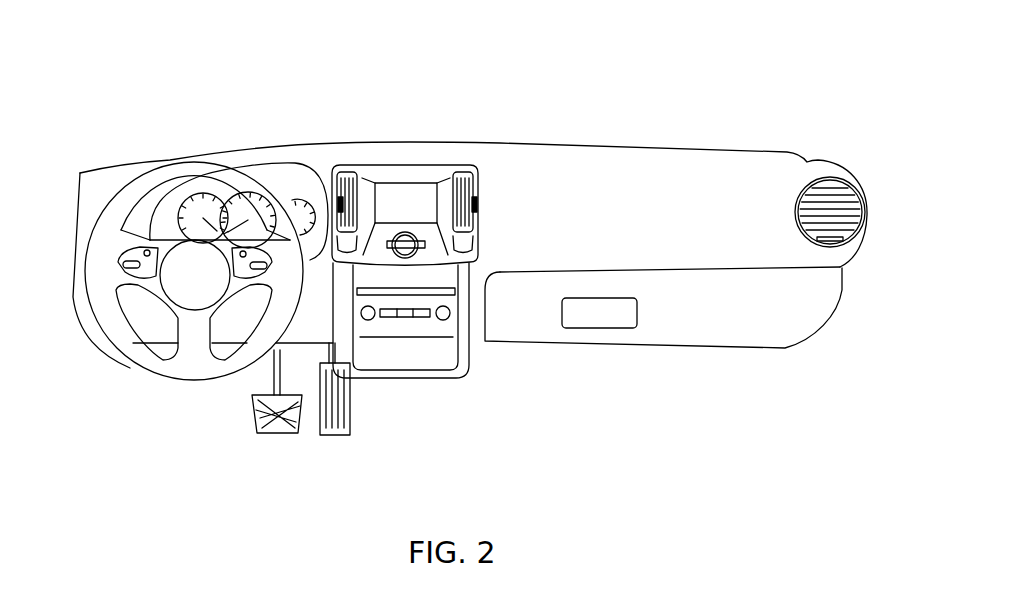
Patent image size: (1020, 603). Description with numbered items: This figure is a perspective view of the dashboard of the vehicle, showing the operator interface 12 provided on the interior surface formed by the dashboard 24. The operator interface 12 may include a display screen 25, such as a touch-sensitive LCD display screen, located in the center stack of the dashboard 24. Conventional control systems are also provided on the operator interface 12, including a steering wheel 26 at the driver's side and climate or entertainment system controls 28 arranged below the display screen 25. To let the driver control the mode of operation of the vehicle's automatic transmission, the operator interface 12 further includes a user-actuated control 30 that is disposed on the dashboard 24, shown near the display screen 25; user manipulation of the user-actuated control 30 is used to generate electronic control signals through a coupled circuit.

The operator interface 12 is at (640, 115).
The dashboard 24 is at (312, 143).
The display screen 25 is at (387, 183).
The steering wheel 26 is at (193, 380).
The climate or entertainment system controls 28 is at (432, 242).
The user-actuated control 30 is at (438, 224).